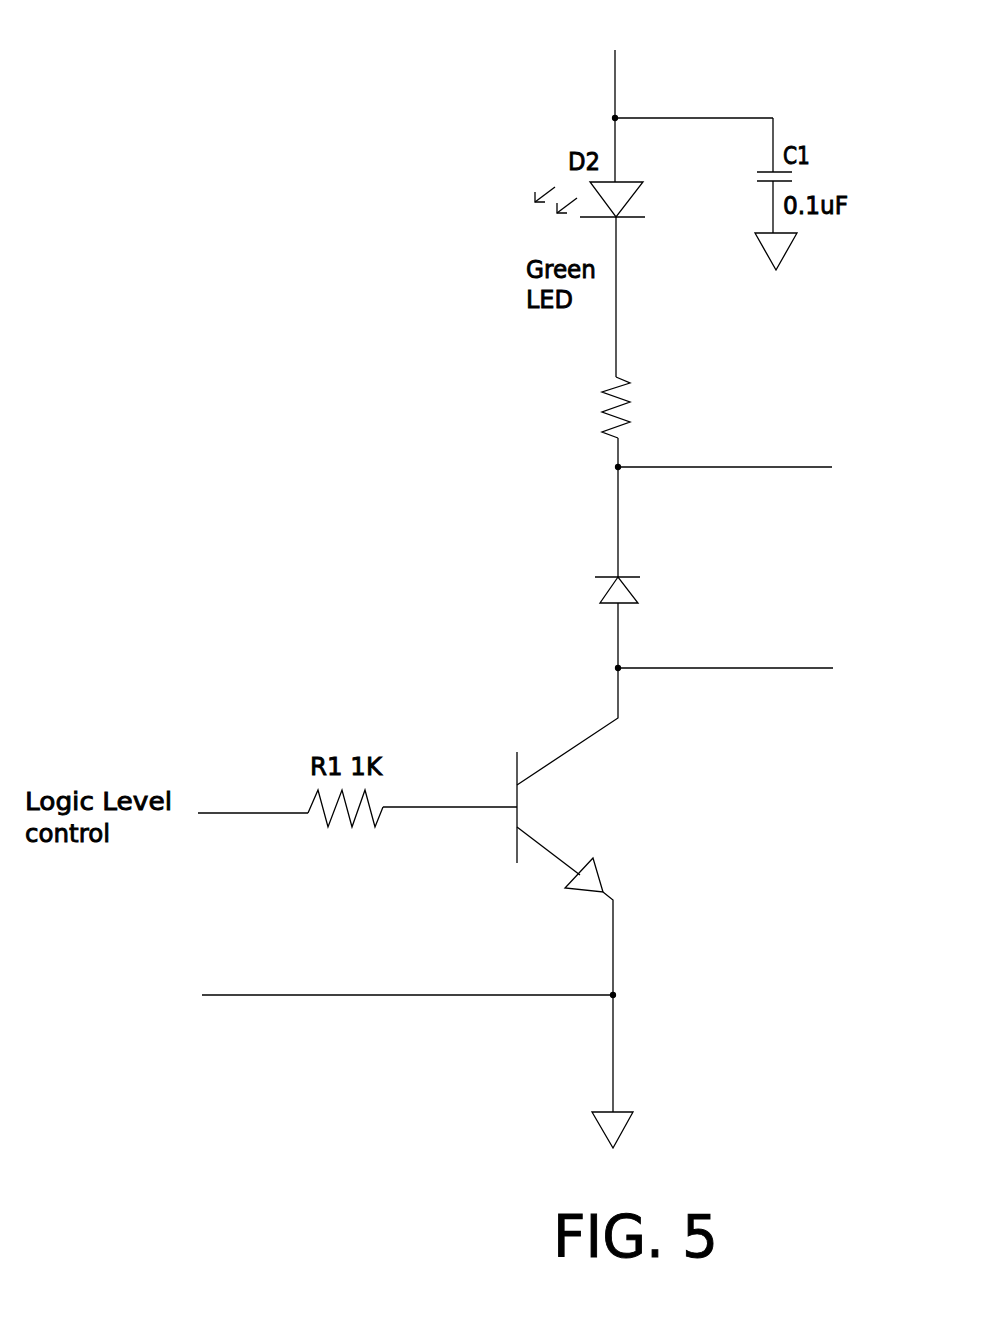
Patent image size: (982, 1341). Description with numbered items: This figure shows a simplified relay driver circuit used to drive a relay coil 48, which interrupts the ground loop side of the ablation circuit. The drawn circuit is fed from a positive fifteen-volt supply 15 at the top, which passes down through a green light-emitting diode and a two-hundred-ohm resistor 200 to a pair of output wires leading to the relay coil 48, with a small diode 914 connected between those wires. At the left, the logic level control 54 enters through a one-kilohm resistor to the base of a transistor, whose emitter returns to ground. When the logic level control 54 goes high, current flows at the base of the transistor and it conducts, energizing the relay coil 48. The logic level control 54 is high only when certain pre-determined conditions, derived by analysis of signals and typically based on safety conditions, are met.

The relay coil 48 is at (752, 568).
The logic level control 54 is at (560, 856).
The +15 V supply 15 is at (685, 93).
The resistor R2 (200 ohm) 200 is at (647, 408).
The diode D1 (1N914) 914 is at (658, 592).